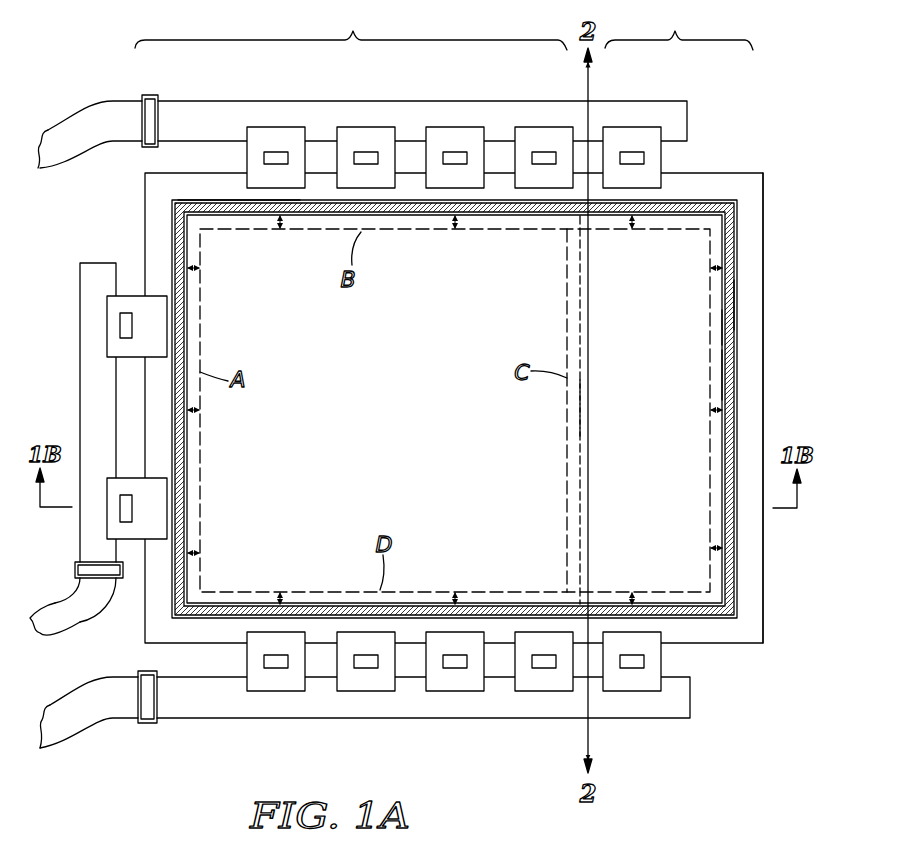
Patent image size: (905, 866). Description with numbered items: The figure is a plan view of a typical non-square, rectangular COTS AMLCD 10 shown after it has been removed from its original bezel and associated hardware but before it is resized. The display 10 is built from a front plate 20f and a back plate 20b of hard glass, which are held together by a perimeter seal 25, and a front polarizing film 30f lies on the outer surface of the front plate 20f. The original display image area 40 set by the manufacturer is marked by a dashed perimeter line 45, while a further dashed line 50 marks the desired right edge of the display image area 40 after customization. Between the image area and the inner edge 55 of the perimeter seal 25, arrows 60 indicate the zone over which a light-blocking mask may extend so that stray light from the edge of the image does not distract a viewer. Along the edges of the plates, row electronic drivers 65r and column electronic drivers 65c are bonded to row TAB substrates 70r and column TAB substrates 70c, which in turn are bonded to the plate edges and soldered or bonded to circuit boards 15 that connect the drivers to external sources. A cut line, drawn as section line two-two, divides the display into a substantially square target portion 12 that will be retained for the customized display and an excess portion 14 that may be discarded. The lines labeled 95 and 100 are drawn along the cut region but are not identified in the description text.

The COTS AMLCD display 10 is at (748, 158).
The target portion 12 is at (351, 27).
The excess portion 14 is at (679, 28).
The circuit boards 15 is at (678, 118).
The front plate 20f is at (738, 203).
The back plate 20b is at (750, 263).
The perimeter seal 25 is at (195, 200).
The front polarizing film 30f is at (738, 236).
The display image area 40 is at (683, 376).
The dashed perimeter line 45 is at (710, 293).
The dashed line 50 is at (567, 316).
The inner edge of perimeter seal 55 is at (720, 328).
The arrows 60 is at (452, 230).
The column electronic drivers 65c is at (276, 152).
The row electronic drivers 65r is at (120, 325).
The column TAB substrates 70c is at (260, 133).
The row TAB substrates 70r is at (118, 348).
The boundary line 95 is at (580, 290).
The boundary line 100 is at (583, 408).